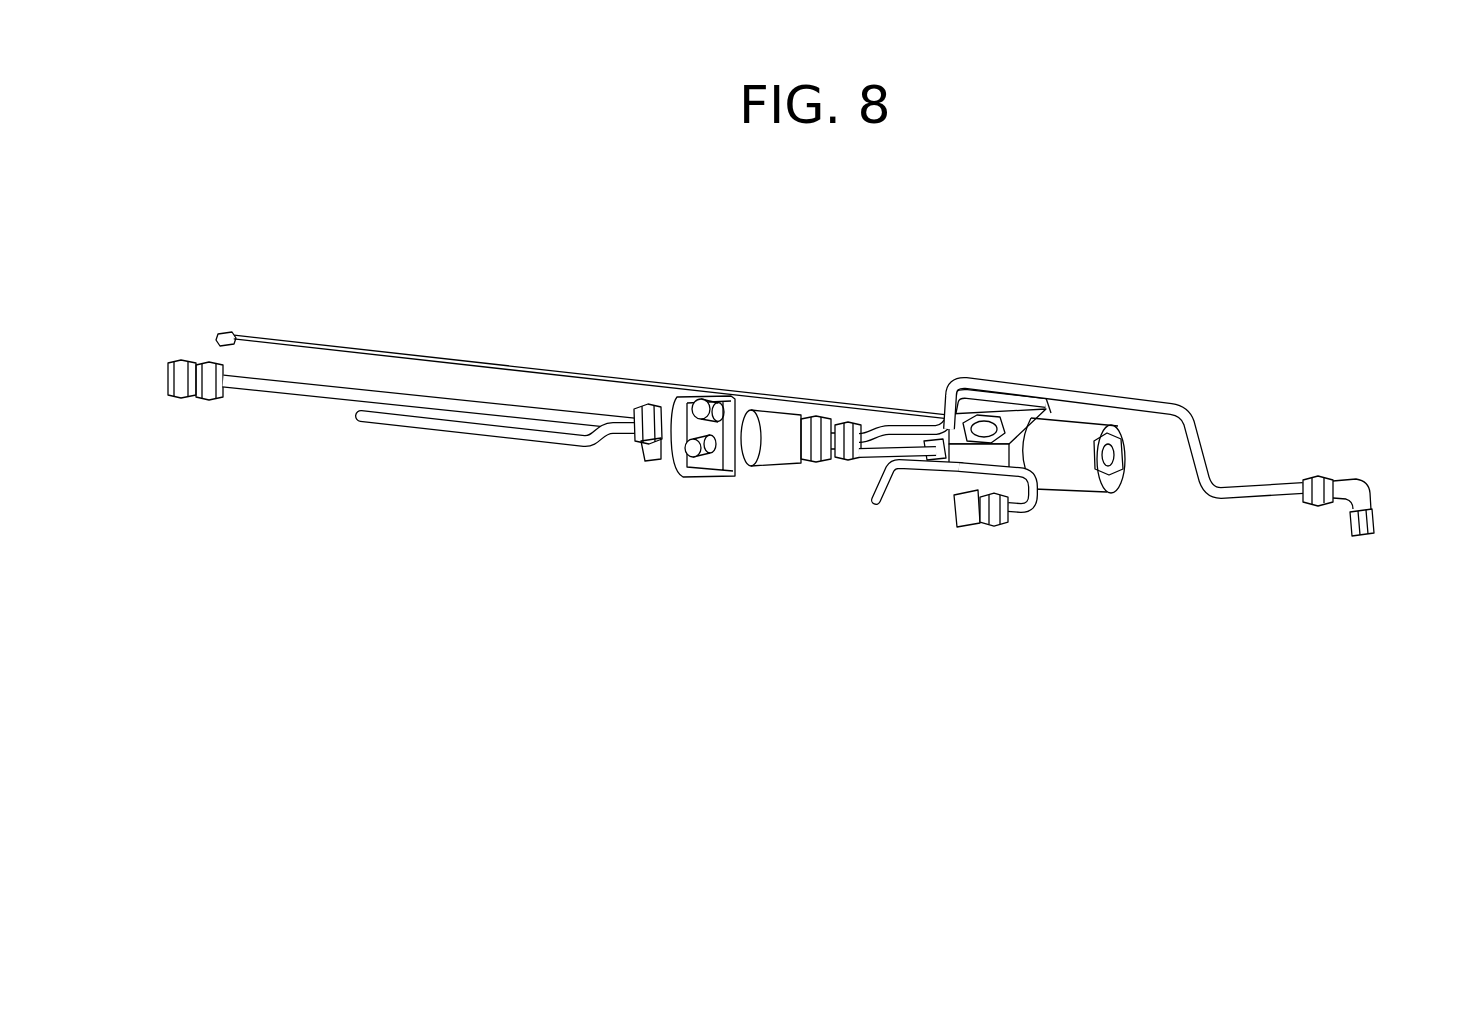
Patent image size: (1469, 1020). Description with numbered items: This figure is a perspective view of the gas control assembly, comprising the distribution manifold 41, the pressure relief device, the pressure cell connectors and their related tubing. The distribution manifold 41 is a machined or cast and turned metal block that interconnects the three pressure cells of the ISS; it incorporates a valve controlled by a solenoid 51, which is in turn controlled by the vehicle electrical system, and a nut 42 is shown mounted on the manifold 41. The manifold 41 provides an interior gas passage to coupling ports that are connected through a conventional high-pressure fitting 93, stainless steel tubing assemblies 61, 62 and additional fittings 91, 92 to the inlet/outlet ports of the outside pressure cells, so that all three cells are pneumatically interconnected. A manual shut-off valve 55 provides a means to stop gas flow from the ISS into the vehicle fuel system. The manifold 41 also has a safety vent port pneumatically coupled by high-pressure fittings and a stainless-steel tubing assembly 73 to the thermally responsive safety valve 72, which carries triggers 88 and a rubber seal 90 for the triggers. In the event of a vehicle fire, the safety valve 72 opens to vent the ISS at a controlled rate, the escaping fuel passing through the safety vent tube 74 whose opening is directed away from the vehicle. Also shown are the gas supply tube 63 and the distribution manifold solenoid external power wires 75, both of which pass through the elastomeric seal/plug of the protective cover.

The distribution manifold 41 is at (1016, 424).
The nut 42 is at (982, 424).
The solenoid 51 is at (1080, 470).
The manual shut-off valve 55 is at (1030, 475).
The stainless steel tubing assembly 61 is at (889, 512).
The stainless steel tubing assembly 62 is at (1212, 442).
The gas supply tube 63 is at (252, 410).
The thermally responsive safety valve 72 is at (758, 436).
The stainless-steel tubing assembly 73 is at (870, 467).
The safety vent tube 74 is at (422, 441).
The distribution manifold solenoid external power wires 75 is at (314, 328).
The triggers 88 is at (680, 422).
The rubber seal 90 is at (703, 491).
The fitting 91 is at (1362, 549).
The fitting 92 is at (633, 476).
The high-pressure fitting 93 is at (970, 530).